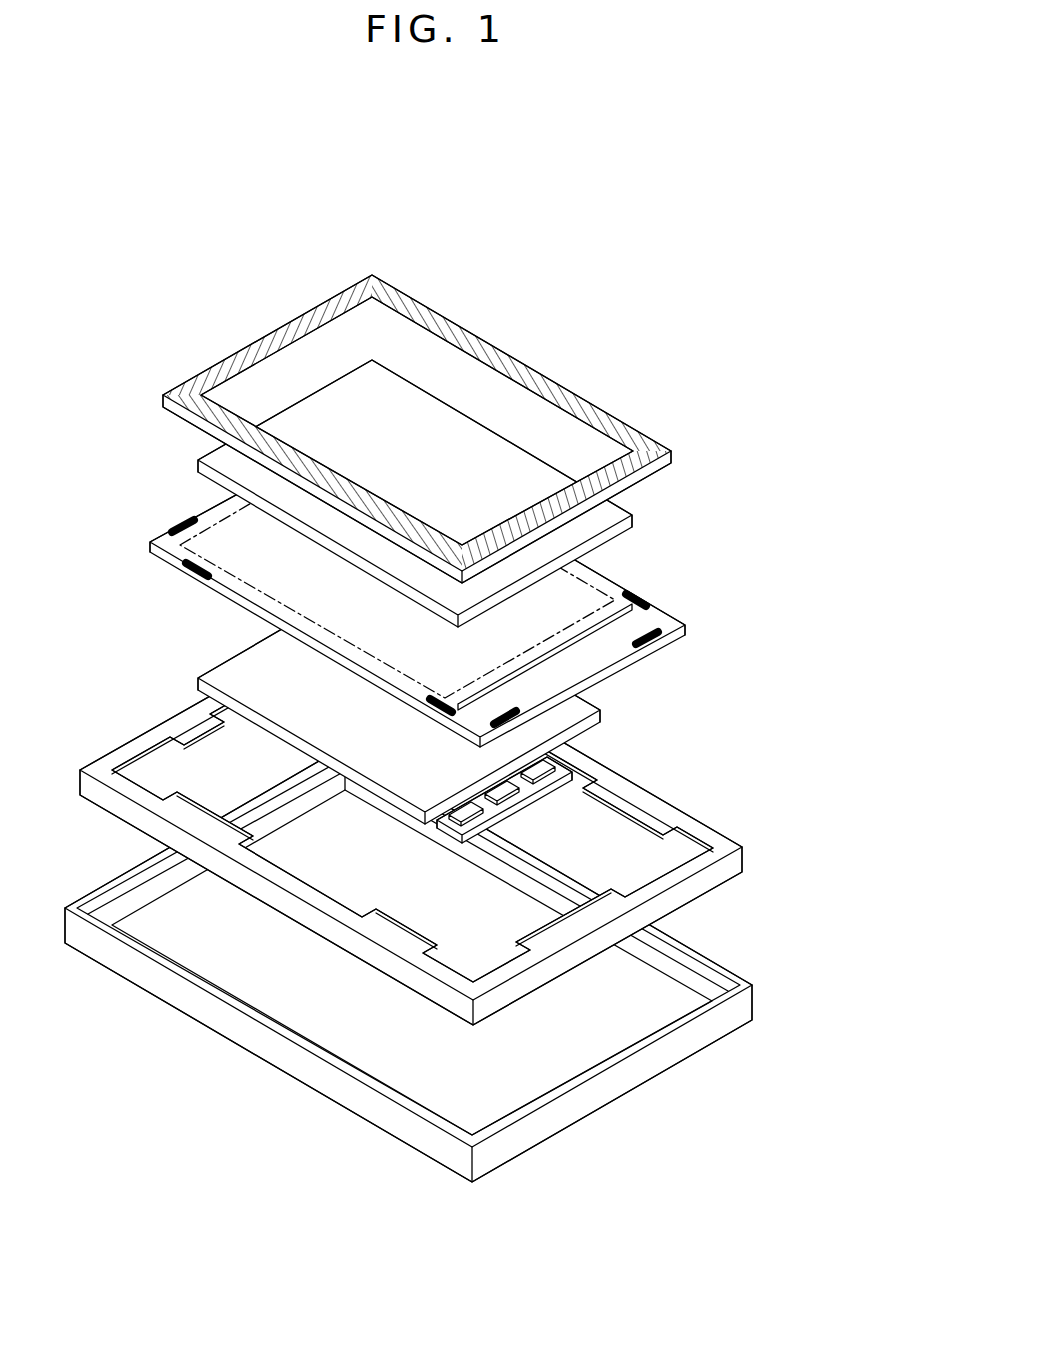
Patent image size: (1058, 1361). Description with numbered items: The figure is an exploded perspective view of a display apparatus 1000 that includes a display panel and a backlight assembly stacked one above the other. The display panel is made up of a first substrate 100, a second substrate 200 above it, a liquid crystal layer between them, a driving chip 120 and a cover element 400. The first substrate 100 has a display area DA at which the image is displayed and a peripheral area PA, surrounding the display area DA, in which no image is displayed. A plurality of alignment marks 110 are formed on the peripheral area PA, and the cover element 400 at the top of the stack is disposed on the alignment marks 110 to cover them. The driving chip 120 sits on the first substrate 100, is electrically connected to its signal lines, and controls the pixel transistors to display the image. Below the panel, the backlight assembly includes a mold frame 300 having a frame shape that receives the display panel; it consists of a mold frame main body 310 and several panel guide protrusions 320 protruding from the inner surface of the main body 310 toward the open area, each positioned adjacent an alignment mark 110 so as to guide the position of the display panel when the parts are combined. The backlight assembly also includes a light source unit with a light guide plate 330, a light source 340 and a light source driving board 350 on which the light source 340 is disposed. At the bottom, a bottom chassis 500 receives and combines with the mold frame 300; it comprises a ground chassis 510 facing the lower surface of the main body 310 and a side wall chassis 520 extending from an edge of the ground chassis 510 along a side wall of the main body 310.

The display apparatus 1000 is at (426, 226).
The first substrate 100 is at (463, 588).
The alignment marks 110 is at (665, 640).
The driving chip 120 is at (640, 602).
The display area DA is at (567, 583).
The peripheral area PA is at (605, 587).
The second substrate 200 is at (612, 518).
The mold frame 300 is at (448, 867).
The mold frame main body 310 is at (735, 860).
The panel guide protrusion 320 is at (650, 878).
The light guide plate 330 is at (225, 672).
The light source 340 is at (558, 766).
The light source driving board 350 is at (563, 767).
The cover element 400 is at (518, 372).
The bottom chassis 500 is at (408, 995).
The ground chassis 510 is at (497, 1090).
The side wall chassis 520 is at (613, 1085).